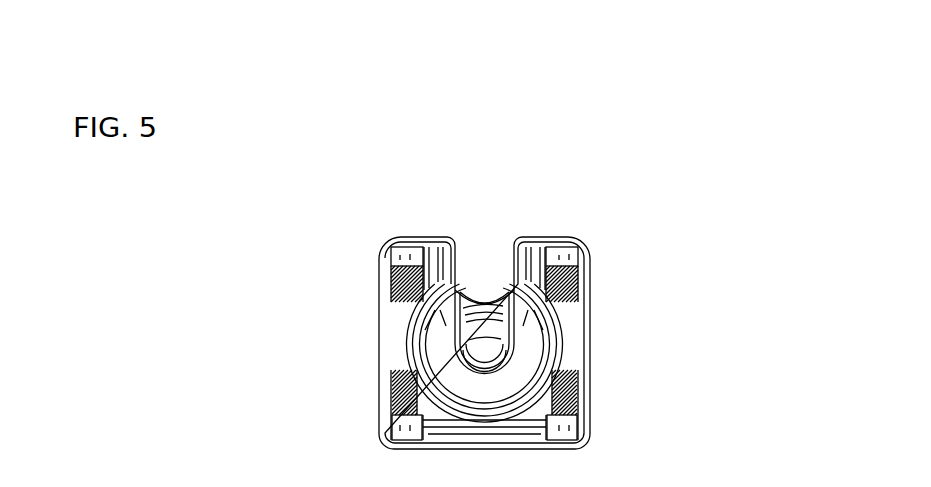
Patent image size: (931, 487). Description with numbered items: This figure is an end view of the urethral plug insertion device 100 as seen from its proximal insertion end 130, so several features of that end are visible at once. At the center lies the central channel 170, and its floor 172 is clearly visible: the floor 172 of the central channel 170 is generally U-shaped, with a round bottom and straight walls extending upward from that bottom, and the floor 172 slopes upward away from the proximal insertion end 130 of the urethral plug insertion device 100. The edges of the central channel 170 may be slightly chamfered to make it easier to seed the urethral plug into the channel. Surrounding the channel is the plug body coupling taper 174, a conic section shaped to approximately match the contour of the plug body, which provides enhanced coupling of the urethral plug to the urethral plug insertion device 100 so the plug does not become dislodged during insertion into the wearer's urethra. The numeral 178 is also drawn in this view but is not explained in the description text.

The urethral plug insertion device 100 is at (607, 162).
The proximal insertion end 130 is at (403, 378).
The central channel 170 is at (477, 247).
The floor 172 is at (490, 328).
The plug body coupling taper 174 is at (440, 328).
The channel bottom 178 is at (488, 370).